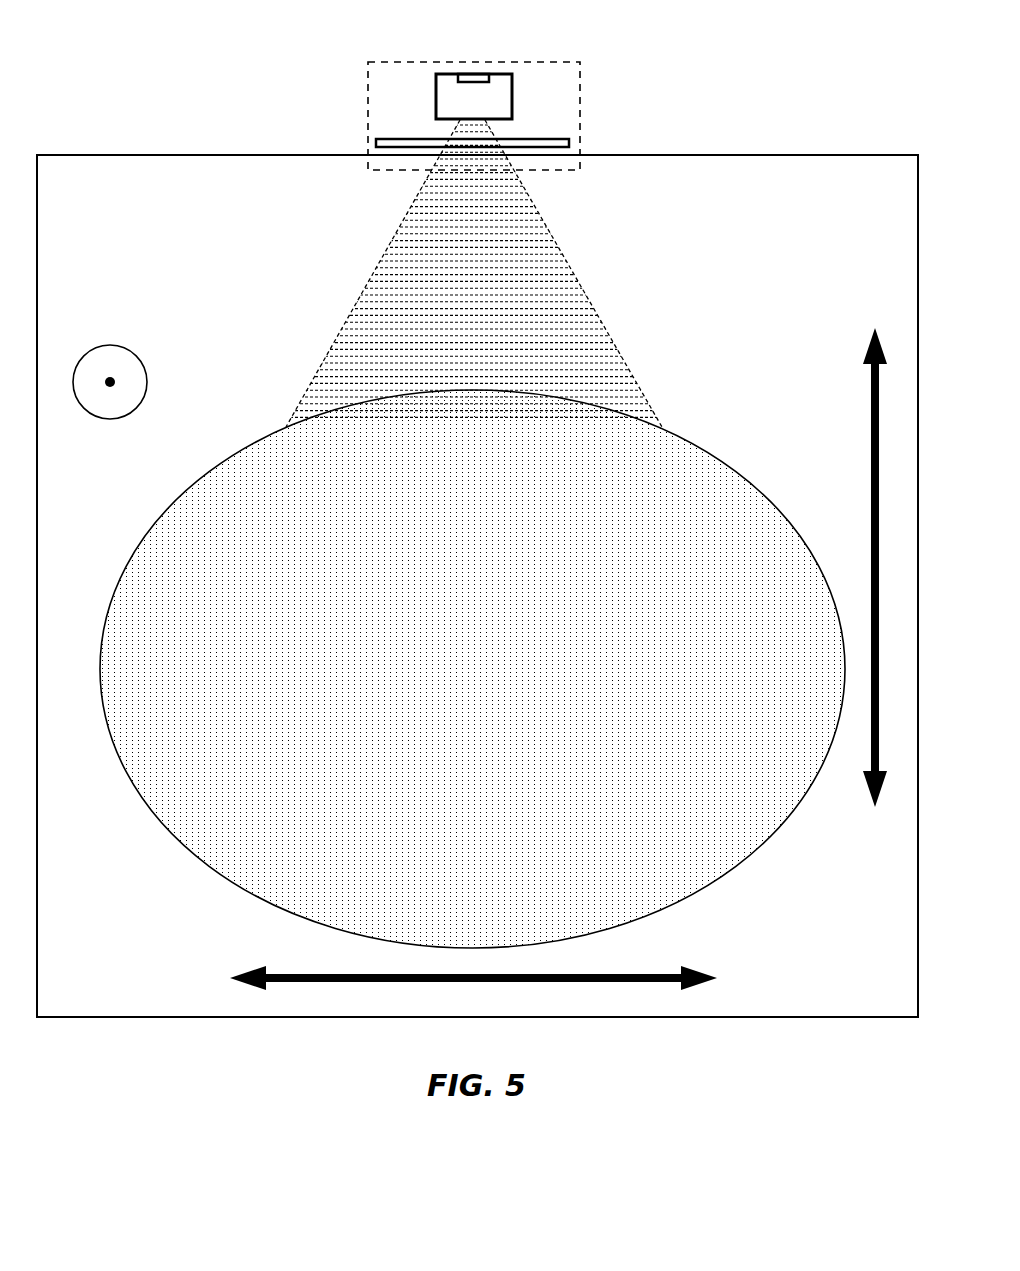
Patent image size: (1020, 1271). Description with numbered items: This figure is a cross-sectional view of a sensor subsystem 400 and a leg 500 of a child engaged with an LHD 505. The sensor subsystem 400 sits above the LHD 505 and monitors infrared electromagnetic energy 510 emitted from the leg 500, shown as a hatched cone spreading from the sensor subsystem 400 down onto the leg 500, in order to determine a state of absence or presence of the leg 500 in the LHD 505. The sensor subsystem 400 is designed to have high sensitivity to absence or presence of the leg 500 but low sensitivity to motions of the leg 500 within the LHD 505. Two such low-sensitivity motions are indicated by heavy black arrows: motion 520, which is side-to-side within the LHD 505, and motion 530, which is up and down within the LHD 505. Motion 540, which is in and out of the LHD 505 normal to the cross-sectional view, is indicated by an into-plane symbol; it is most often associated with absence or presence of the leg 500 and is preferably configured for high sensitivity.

The sensor subsystem 400 is at (580, 82).
The LHD 505 is at (97, 155).
The infrared electromagnetic energy 510 is at (475, 273).
The leg 500 is at (472, 669).
The motion 520 is at (648, 972).
The motion 530 is at (873, 462).
The motion 540 is at (106, 345).